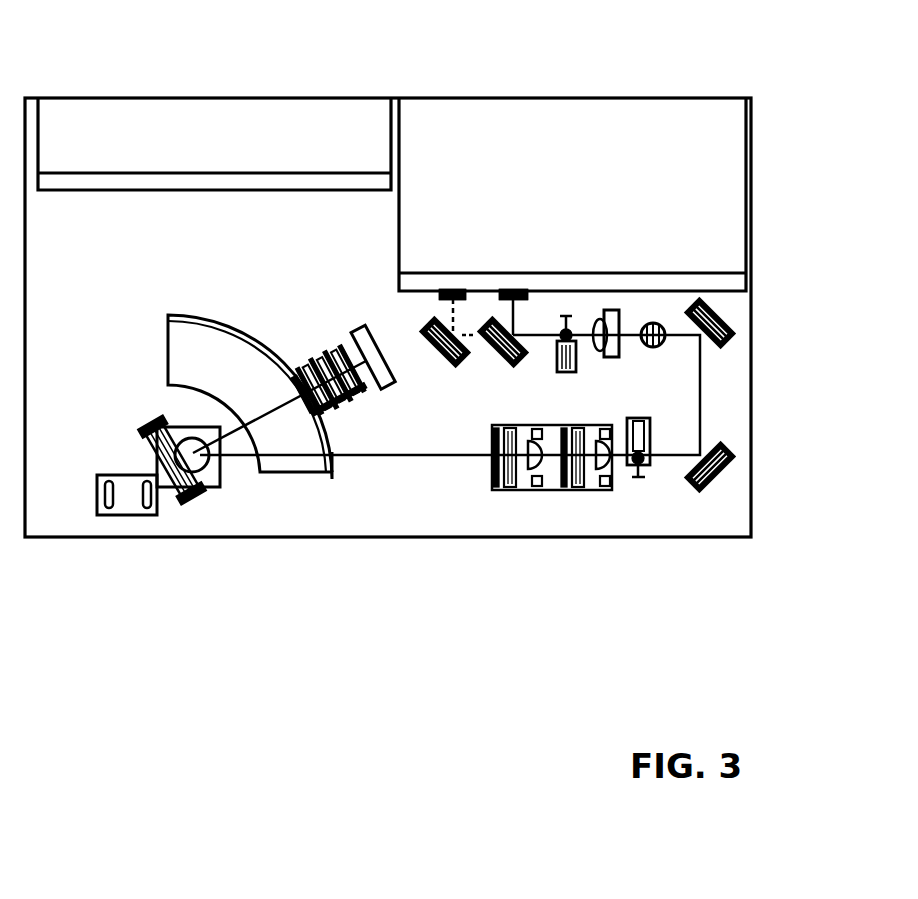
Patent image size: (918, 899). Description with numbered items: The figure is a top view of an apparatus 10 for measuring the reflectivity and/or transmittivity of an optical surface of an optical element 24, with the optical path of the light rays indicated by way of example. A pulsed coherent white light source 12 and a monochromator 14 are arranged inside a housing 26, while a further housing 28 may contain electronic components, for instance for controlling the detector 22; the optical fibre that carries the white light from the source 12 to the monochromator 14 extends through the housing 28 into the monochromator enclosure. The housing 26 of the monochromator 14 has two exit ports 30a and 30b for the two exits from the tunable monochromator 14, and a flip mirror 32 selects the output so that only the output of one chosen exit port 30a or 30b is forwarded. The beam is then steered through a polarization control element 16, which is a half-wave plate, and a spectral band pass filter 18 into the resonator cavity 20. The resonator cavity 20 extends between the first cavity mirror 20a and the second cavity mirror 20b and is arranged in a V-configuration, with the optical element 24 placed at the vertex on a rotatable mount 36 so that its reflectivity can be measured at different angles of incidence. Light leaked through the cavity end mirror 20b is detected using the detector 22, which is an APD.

The apparatus 10 is at (397, 575).
The pulsed coherent white light source 12 is at (491, 208).
The monochromator 14 is at (558, 208).
The polarization control element 16 is at (619, 303).
The spectral band pass filter 18 is at (661, 311).
The resonator cavity 20 is at (437, 489).
The first cavity mirror 20a is at (598, 496).
The second cavity mirror 20b is at (342, 343).
The detector 22 is at (372, 330).
The optical element 24 is at (188, 499).
The housing 26 is at (728, 218).
The further housing 28 is at (88, 118).
The exit port 30a is at (445, 290).
The exit port 30b is at (528, 290).
The flip mirror 32 is at (501, 370).
The rotatable mount 36 is at (226, 489).